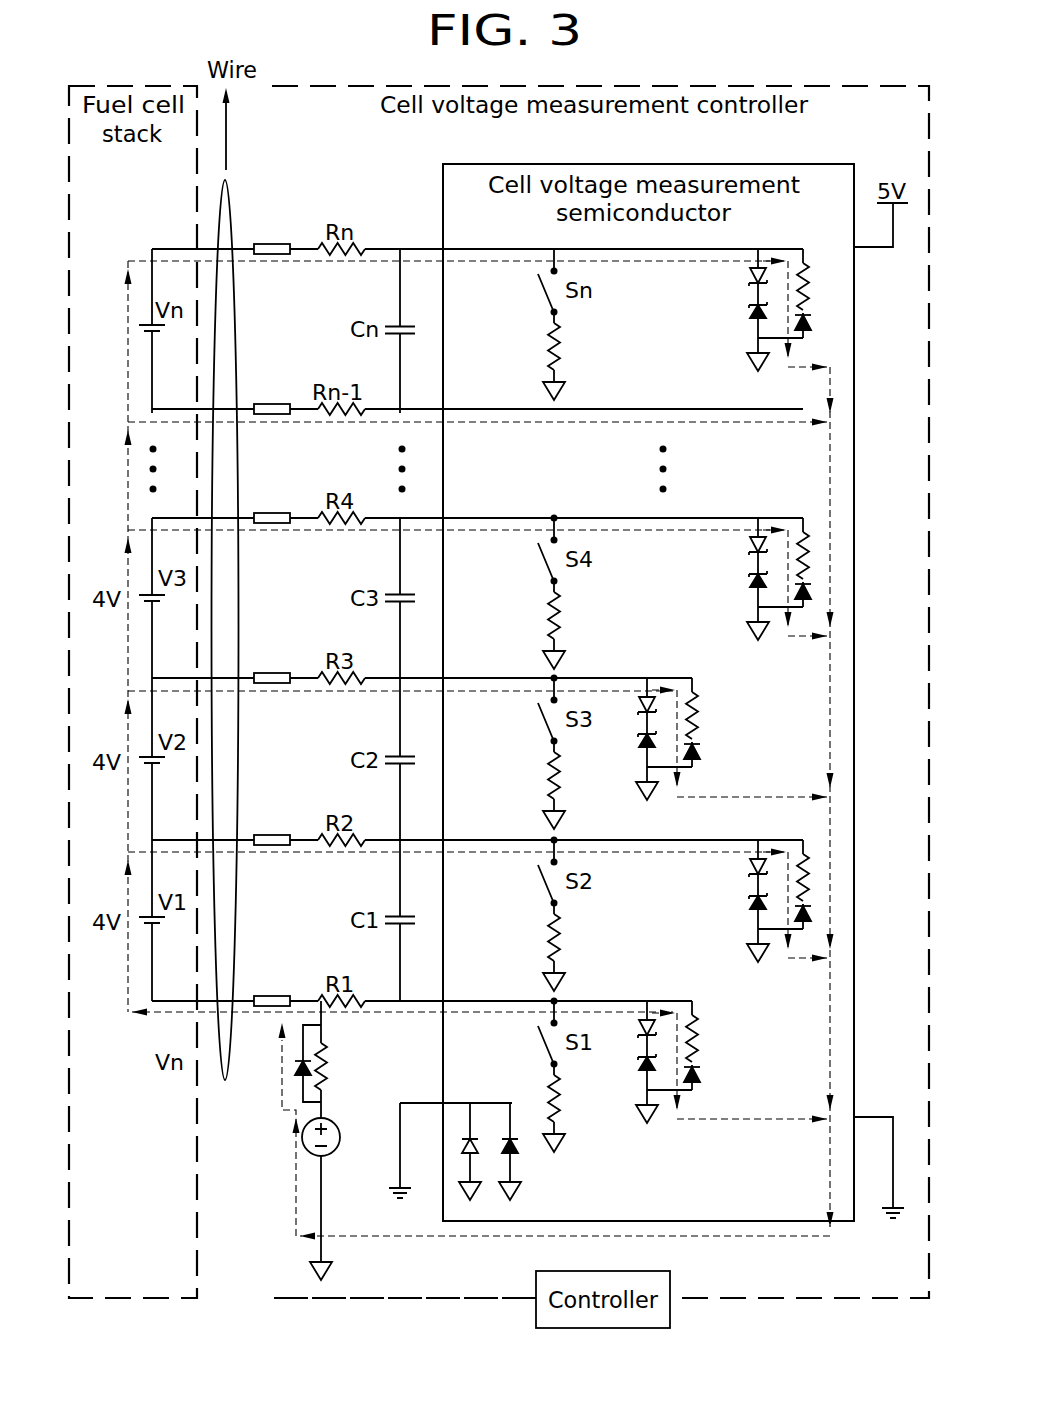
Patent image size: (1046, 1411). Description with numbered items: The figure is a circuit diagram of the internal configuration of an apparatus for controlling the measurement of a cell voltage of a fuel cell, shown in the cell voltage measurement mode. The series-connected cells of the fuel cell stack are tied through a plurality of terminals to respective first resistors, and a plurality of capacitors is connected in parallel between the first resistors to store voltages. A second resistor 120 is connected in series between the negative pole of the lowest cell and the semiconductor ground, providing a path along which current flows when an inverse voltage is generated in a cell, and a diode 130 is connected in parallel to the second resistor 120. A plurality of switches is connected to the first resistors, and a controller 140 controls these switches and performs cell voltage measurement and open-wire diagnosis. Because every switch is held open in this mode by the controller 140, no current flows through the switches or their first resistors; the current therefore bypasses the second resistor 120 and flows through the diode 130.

The second resistor 120 is at (328, 1062).
The diode 130 is at (300, 1063).
The controller 140 is at (670, 1316).